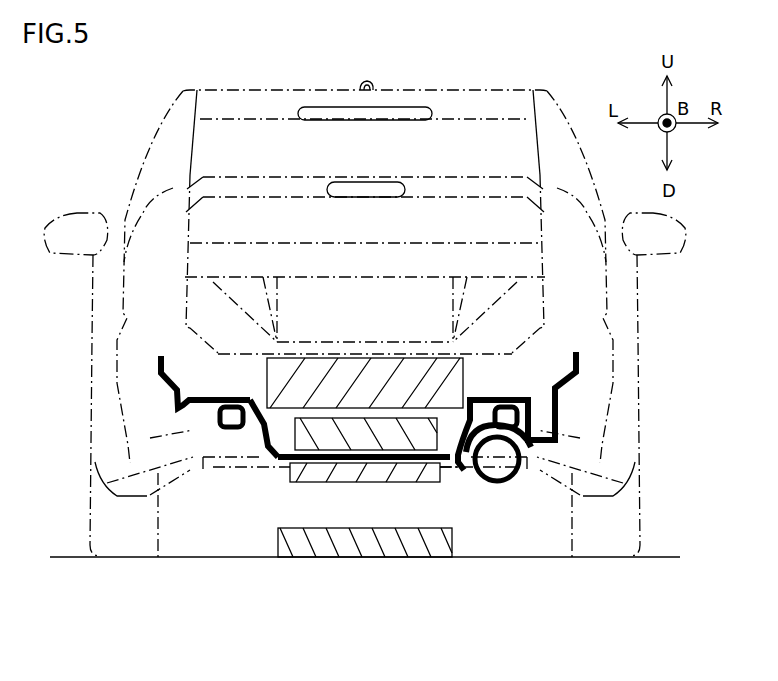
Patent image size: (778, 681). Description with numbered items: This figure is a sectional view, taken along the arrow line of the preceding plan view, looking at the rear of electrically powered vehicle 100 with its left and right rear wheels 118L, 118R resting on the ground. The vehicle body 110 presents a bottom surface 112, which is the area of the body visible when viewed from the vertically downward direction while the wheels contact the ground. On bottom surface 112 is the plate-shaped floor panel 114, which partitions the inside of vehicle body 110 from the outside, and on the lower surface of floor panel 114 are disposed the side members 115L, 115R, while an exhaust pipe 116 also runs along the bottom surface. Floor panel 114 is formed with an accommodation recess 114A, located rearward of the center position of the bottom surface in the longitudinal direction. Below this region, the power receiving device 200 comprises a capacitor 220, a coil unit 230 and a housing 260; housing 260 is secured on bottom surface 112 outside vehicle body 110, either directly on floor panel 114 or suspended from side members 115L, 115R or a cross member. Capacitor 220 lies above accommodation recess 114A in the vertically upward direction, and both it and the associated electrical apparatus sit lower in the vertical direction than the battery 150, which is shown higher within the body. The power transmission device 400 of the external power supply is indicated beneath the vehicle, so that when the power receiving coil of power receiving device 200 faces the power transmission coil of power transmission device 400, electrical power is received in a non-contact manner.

The electrically powered vehicle 100 is at (238, 75).
The vehicle body 110 is at (323, 90).
The bottom surface 112 is at (462, 472).
The floor panel 114 is at (308, 460).
The accommodation recess 114A is at (268, 447).
The left side member 115L is at (213, 416).
The right side member 115R is at (532, 408).
The exhaust pipe 116 is at (497, 486).
The left rear wheel 118L is at (128, 520).
The right rear wheel 118R is at (615, 528).
The battery 150 is at (447, 383).
The power receiving device 200 is at (437, 601).
The capacitor 220 is at (403, 437).
The coil unit 230 is at (365, 533).
The housing 260 is at (347, 484).
The power transmission device 400 is at (453, 479).